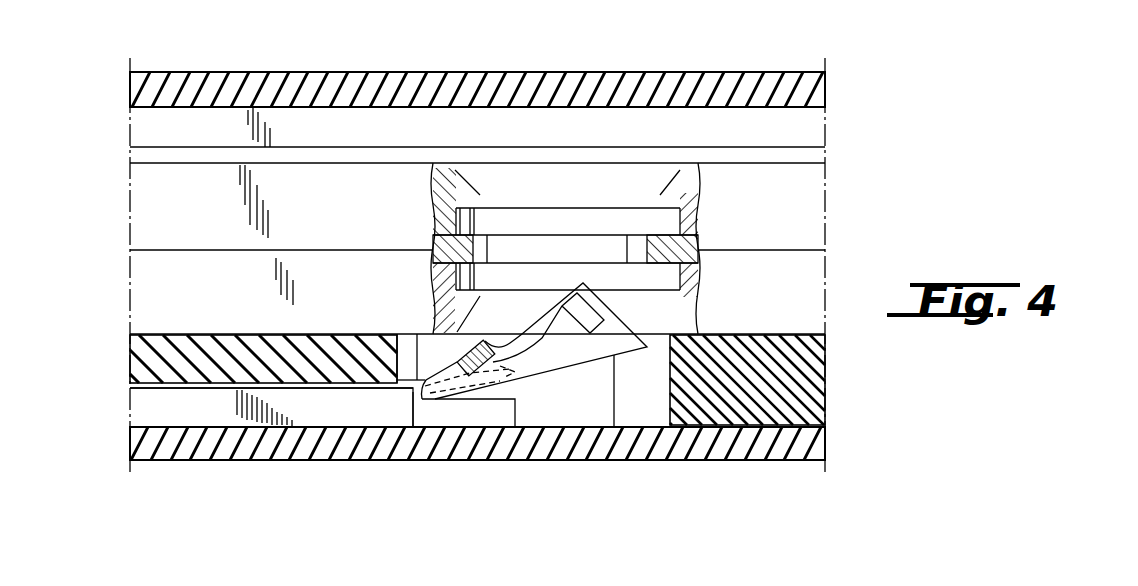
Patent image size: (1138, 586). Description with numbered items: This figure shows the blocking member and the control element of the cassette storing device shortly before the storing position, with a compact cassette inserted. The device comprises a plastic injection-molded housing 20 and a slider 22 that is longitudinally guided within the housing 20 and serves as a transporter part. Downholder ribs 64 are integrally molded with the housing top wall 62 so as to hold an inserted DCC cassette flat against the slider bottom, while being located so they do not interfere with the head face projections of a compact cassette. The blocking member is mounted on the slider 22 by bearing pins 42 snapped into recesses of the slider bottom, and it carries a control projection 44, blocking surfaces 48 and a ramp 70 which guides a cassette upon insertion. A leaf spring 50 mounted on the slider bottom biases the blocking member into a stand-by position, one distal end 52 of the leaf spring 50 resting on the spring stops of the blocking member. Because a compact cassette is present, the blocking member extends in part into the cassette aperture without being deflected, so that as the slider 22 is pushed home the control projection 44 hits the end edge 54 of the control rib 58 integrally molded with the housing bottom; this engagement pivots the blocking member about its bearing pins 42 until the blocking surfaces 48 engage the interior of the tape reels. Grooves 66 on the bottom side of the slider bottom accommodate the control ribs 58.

The housing 20 is at (307, 62).
The slider 22 is at (750, 424).
The bearing pins 42 is at (497, 354).
The control projection 44 is at (417, 377).
The blocking surfaces 48 is at (574, 290).
The leaf spring 50 is at (503, 369).
The end of leaf spring 52 is at (524, 435).
The end edge 54 is at (422, 410).
The control rib 58 is at (327, 413).
The housing top wall 62 is at (478, 80).
The downholder ribs 64 is at (565, 123).
The grooves 66 is at (217, 393).
The ramp 70 is at (624, 320).